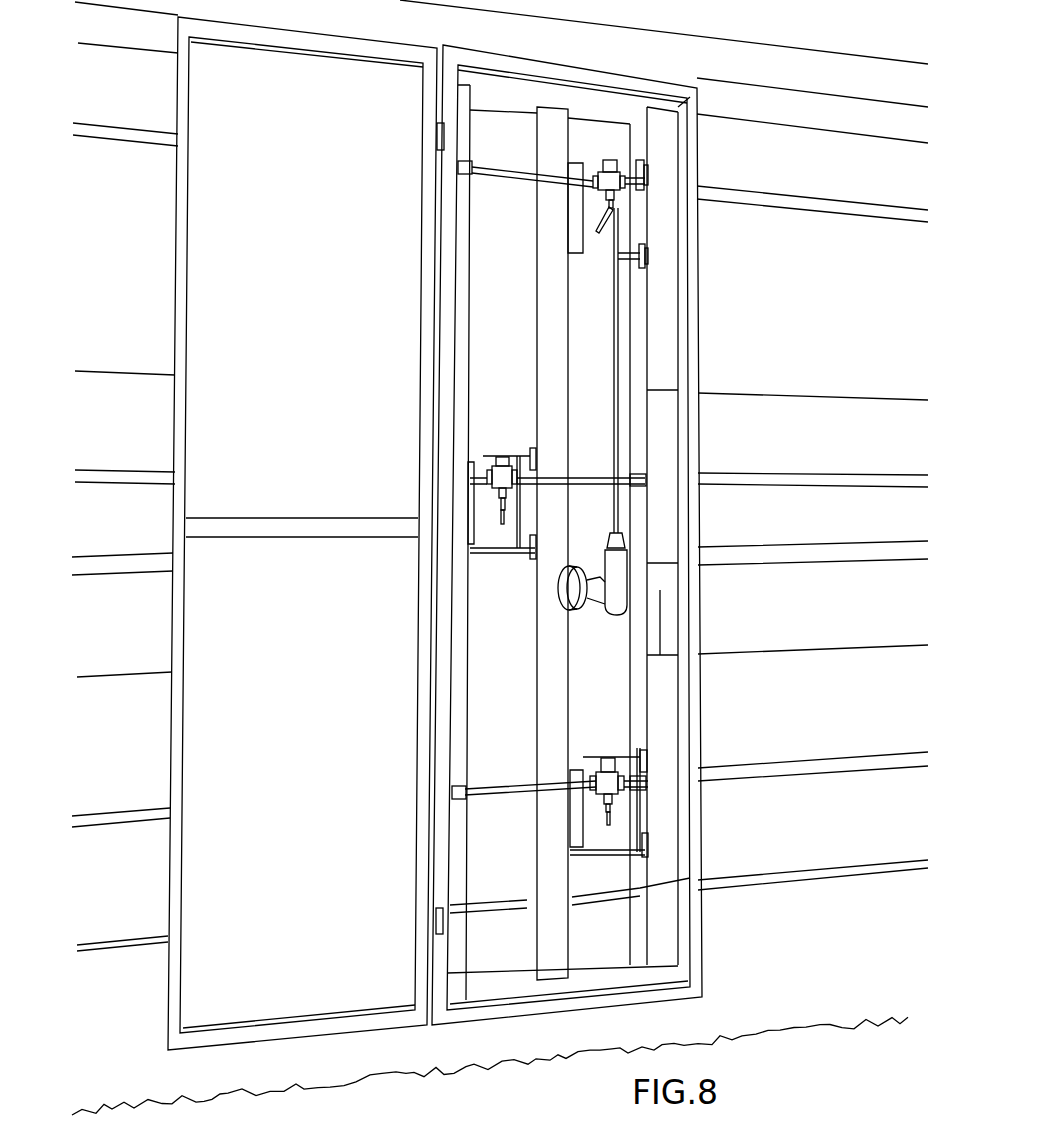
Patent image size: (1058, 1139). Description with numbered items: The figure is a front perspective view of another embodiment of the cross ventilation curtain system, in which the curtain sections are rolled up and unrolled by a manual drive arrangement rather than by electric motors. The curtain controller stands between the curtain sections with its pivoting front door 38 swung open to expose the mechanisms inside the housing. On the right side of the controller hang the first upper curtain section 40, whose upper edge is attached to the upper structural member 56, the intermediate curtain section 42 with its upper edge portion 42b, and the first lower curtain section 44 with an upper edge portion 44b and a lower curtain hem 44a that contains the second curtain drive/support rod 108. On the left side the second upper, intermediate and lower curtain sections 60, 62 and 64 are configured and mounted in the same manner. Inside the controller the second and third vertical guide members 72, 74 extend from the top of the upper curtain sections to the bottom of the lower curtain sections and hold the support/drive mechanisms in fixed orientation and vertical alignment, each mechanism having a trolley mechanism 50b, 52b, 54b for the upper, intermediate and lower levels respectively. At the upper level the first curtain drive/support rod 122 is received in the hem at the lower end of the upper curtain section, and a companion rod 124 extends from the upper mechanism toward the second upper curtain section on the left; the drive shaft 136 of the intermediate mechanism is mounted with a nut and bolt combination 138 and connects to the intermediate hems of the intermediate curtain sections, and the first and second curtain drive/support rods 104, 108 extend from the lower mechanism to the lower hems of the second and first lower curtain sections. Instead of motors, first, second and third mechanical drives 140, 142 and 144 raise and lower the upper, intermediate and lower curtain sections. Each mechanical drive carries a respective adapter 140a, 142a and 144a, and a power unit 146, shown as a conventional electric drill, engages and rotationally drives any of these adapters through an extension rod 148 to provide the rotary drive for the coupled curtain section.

The pivoting front door 38 is at (293, 990).
The first upper curtain section 40 is at (824, 173).
The intermediate curtain section 42 is at (821, 448).
The upper edge portion of the intermediate curtain section 42b is at (792, 404).
The first lower curtain section 44 is at (843, 721).
The curtain hem 44a is at (833, 871).
The upper edge portion of the first lower curtain section 44b is at (848, 660).
The trolley mechanism of the first upper support/drive mechanism 50b is at (646, 238).
The trolley mechanism of the second intermediate support/drive mechanism 52b is at (492, 549).
The trolley mechanism 54b is at (642, 828).
The upper structural member 56 is at (113, 36).
The second upper curtain section 60 is at (113, 102).
The second intermediate curtain section 62 is at (108, 435).
The second lower curtain section 64 is at (108, 759).
The second vertical guide member 72 is at (545, 379).
The third vertical guide member 74 is at (653, 316).
The first curtain drive/support rod 104 is at (500, 791).
The second curtain drive/support rod 108 is at (652, 784).
The first curtain drive/support rod 122 is at (646, 184).
The upper actuating rod 124 is at (497, 165).
The drive shaft of the second intermediate support/drive mechanism 136 is at (488, 483).
The nut and bolt combination 138 is at (637, 478).
The first mechanical drive 140 is at (622, 172).
The adapter of the first mechanical drive 140a is at (616, 209).
The second mechanical drive 142 is at (486, 476).
The adapter of the second mechanical drive 142a is at (500, 516).
The third mechanical drive 144 is at (650, 768).
The adapter of the third mechanical drive 144a is at (614, 818).
The power unit 146 is at (624, 585).
The extension rod 148 is at (619, 346).